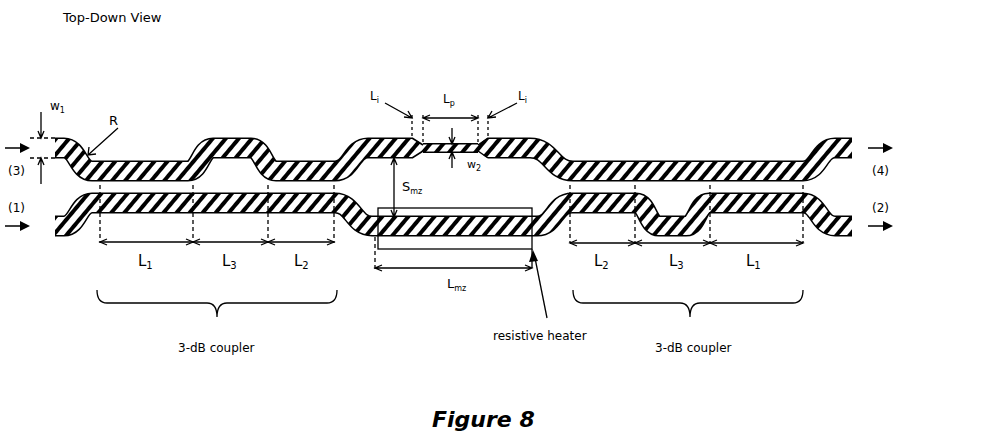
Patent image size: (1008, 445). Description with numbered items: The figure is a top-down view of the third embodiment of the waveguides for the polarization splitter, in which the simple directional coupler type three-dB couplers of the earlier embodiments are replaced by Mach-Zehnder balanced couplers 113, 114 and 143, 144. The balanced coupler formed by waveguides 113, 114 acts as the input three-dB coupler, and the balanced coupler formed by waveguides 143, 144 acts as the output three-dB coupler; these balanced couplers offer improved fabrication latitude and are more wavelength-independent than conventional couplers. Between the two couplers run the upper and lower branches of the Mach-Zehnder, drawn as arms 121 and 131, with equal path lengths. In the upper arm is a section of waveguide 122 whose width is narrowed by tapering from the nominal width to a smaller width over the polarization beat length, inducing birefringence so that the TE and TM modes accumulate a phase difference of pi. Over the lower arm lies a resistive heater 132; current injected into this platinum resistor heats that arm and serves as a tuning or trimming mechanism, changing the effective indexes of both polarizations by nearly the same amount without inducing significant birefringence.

The Mach-Zehnder balanced coupler 113 is at (137, 160).
The Mach-Zehnder balanced coupler 114 is at (118, 207).
The upper Mach-Zehnder arm waveguide 121 is at (350, 152).
The section of waveguide 122 is at (443, 147).
The lower Mach-Zehnder arm waveguide 131 is at (356, 213).
The resistive heater 132 is at (428, 232).
The Mach-Zehnder balanced coupler 143 is at (688, 160).
The Mach-Zehnder balanced coupler 144 is at (770, 208).